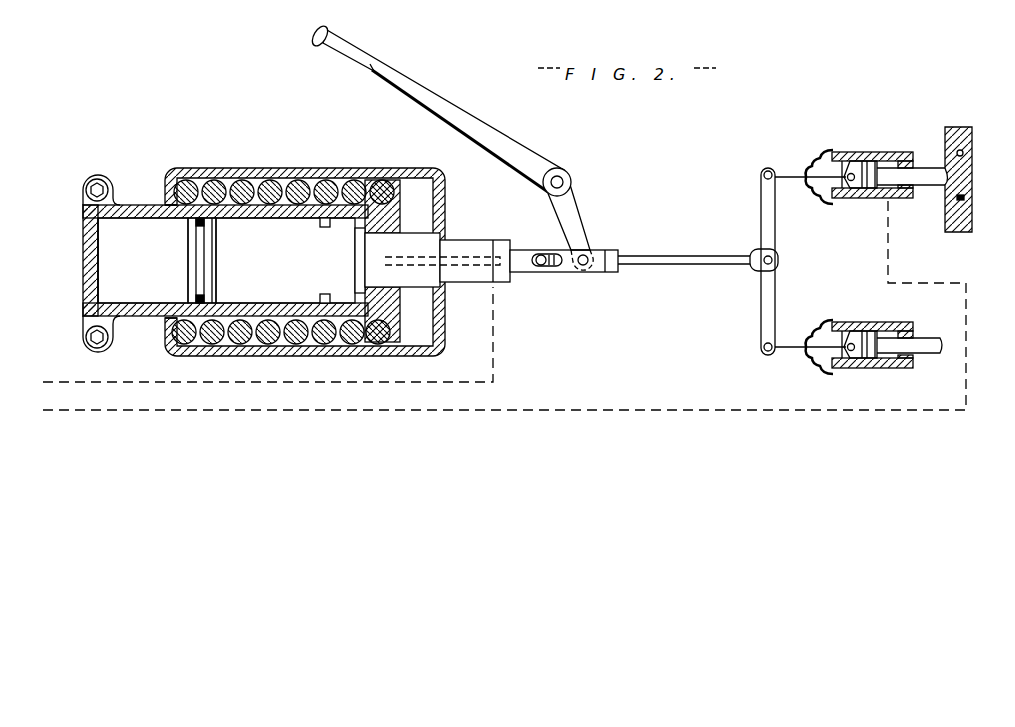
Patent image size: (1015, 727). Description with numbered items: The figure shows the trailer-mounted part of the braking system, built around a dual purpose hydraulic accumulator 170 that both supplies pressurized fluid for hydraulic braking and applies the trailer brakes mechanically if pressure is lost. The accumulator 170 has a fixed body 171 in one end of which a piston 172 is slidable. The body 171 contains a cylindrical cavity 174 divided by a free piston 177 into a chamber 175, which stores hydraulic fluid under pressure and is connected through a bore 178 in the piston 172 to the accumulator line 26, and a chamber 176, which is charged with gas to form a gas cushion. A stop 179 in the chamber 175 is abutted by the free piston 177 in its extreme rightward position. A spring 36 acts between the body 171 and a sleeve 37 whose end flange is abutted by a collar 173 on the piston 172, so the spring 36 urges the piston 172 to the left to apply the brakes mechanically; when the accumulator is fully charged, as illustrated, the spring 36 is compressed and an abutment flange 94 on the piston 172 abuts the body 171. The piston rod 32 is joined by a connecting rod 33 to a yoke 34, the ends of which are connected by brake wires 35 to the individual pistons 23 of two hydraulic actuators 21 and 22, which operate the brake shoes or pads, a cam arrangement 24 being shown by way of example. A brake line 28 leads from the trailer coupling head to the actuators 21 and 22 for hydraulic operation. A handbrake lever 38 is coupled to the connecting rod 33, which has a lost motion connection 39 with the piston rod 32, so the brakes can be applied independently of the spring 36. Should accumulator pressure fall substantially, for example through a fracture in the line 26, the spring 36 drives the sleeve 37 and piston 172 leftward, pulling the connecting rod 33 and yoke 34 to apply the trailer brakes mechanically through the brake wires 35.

The hydraulic actuator 21 is at (855, 166).
The hydraulic actuator 22 is at (876, 368).
The piston 23 is at (865, 179).
The cam arrangement 24 is at (945, 155).
The accumulator line 26 is at (496, 345).
The brake line 28 is at (965, 372).
The piston rod 32 is at (517, 250).
The connecting rod 33 is at (650, 257).
The yoke 34 is at (765, 222).
The brake wires 35 is at (790, 178).
The spring 36 is at (296, 180).
The sleeve 37 is at (378, 172).
The handbrake lever 38 is at (440, 103).
The lost motion connection 39 is at (550, 266).
The abutment flange 94 is at (363, 283).
The hydraulic accumulator 170 is at (244, 158).
The fixed body 171 is at (132, 205).
The piston 172 is at (407, 243).
The collar 173 is at (432, 288).
The cylindrical cavity 174 is at (146, 292).
The chamber 175 is at (285, 260).
The chamber 176 is at (143, 260).
The free piston 177 is at (216, 302).
The bore 178 is at (465, 253).
The stop 179 is at (318, 297).